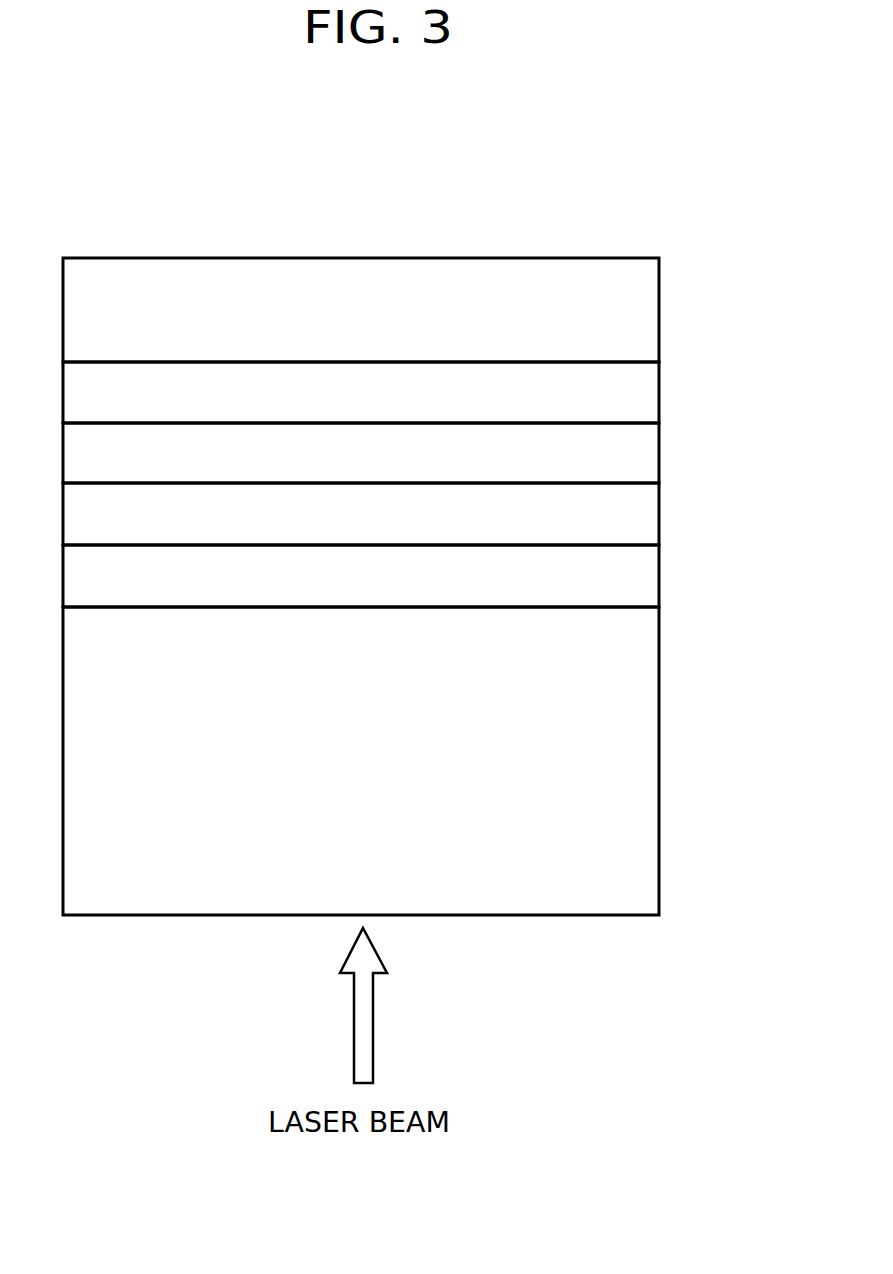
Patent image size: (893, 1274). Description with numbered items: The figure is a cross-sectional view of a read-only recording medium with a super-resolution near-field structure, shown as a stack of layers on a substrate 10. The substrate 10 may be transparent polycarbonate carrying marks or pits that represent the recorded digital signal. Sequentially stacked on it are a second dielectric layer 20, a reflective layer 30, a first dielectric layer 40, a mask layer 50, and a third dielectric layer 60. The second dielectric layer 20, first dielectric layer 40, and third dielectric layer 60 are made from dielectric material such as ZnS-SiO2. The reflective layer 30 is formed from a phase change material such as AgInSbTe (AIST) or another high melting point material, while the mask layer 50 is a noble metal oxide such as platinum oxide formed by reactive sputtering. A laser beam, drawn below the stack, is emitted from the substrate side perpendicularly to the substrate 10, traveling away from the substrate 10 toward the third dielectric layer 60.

The substrate 10 is at (650, 761).
The second dielectric layer 20 is at (650, 573).
The reflective layer 30 is at (650, 513).
The first dielectric layer 40 is at (650, 453).
The mask layer 50 is at (650, 394).
The third dielectric layer 60 is at (650, 318).